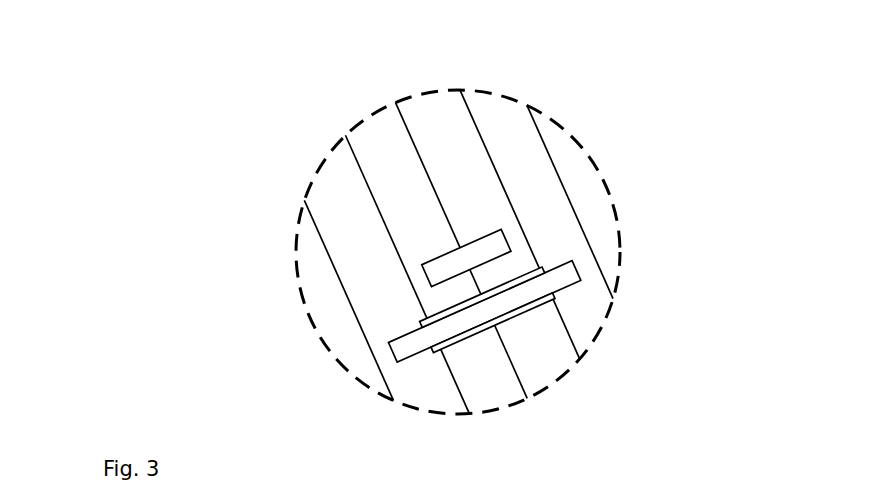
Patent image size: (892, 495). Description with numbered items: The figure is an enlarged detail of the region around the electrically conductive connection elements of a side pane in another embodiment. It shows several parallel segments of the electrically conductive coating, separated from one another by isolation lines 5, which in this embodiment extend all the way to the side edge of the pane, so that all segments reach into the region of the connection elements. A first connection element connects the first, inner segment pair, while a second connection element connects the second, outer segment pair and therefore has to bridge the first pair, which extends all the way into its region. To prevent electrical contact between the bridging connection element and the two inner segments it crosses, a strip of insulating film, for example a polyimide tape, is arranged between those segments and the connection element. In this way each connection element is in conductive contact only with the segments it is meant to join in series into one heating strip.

The isolation line 5 is at (322, 242).